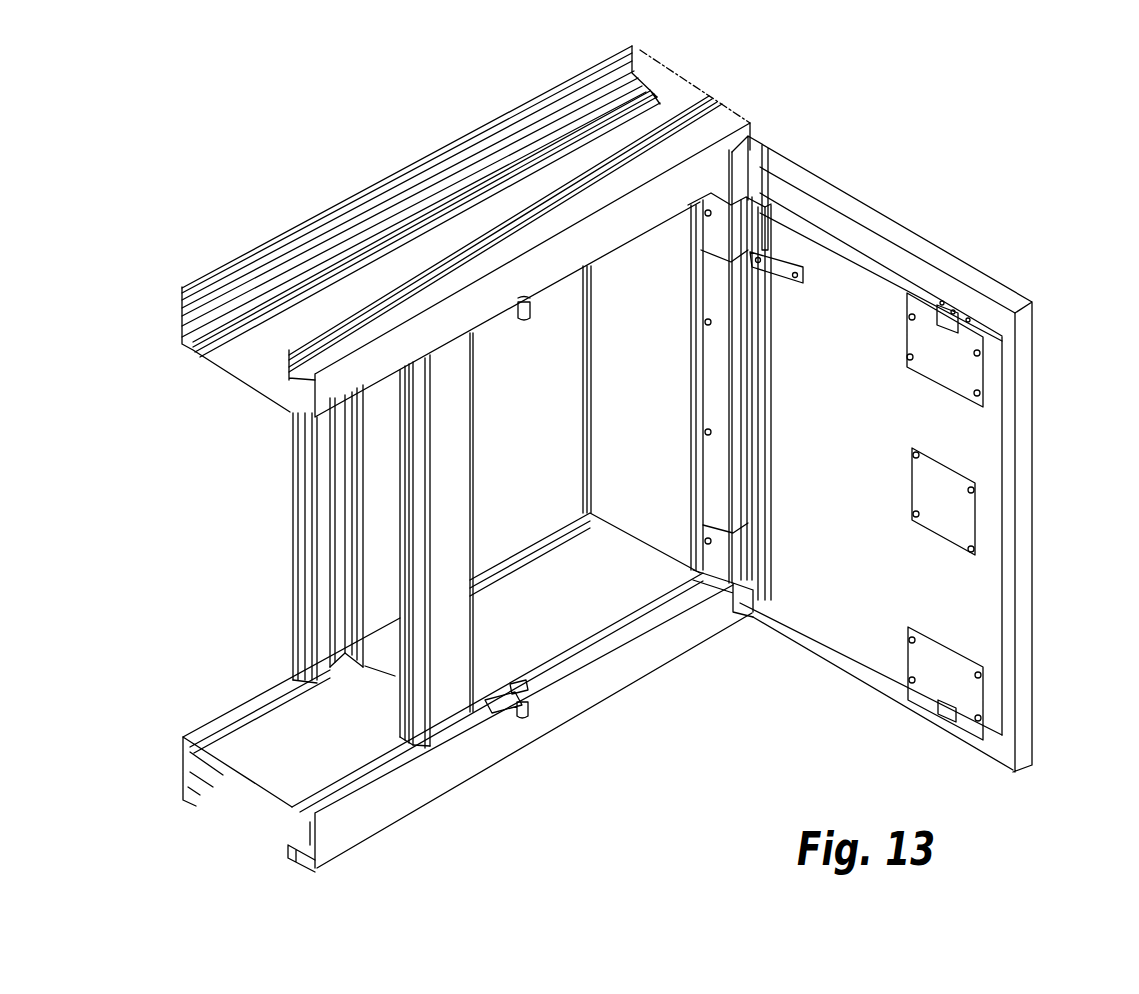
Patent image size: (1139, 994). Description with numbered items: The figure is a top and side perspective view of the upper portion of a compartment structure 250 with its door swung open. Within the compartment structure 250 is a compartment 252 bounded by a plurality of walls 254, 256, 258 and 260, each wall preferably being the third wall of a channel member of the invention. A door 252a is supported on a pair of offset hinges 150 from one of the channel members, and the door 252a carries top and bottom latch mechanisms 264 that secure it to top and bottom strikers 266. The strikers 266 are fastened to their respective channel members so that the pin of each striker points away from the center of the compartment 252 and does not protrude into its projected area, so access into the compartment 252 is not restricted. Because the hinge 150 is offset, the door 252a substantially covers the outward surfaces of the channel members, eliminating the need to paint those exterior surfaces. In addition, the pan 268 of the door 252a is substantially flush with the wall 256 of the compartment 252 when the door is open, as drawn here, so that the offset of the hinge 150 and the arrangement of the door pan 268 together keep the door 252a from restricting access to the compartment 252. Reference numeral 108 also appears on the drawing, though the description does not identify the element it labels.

The bottom sill rail 108 is at (589, 632).
The hinge 150 is at (720, 214).
The compartment structure 250 is at (895, 136).
The compartment 252 is at (563, 505).
The door 252a is at (883, 211).
The wall 254 is at (557, 281).
The wall 256 is at (592, 318).
The wall 258 is at (537, 578).
The wall 260 is at (473, 453).
The latch mechanism 264 is at (957, 357).
The striker 266 is at (533, 305).
The pan 268 is at (883, 550).